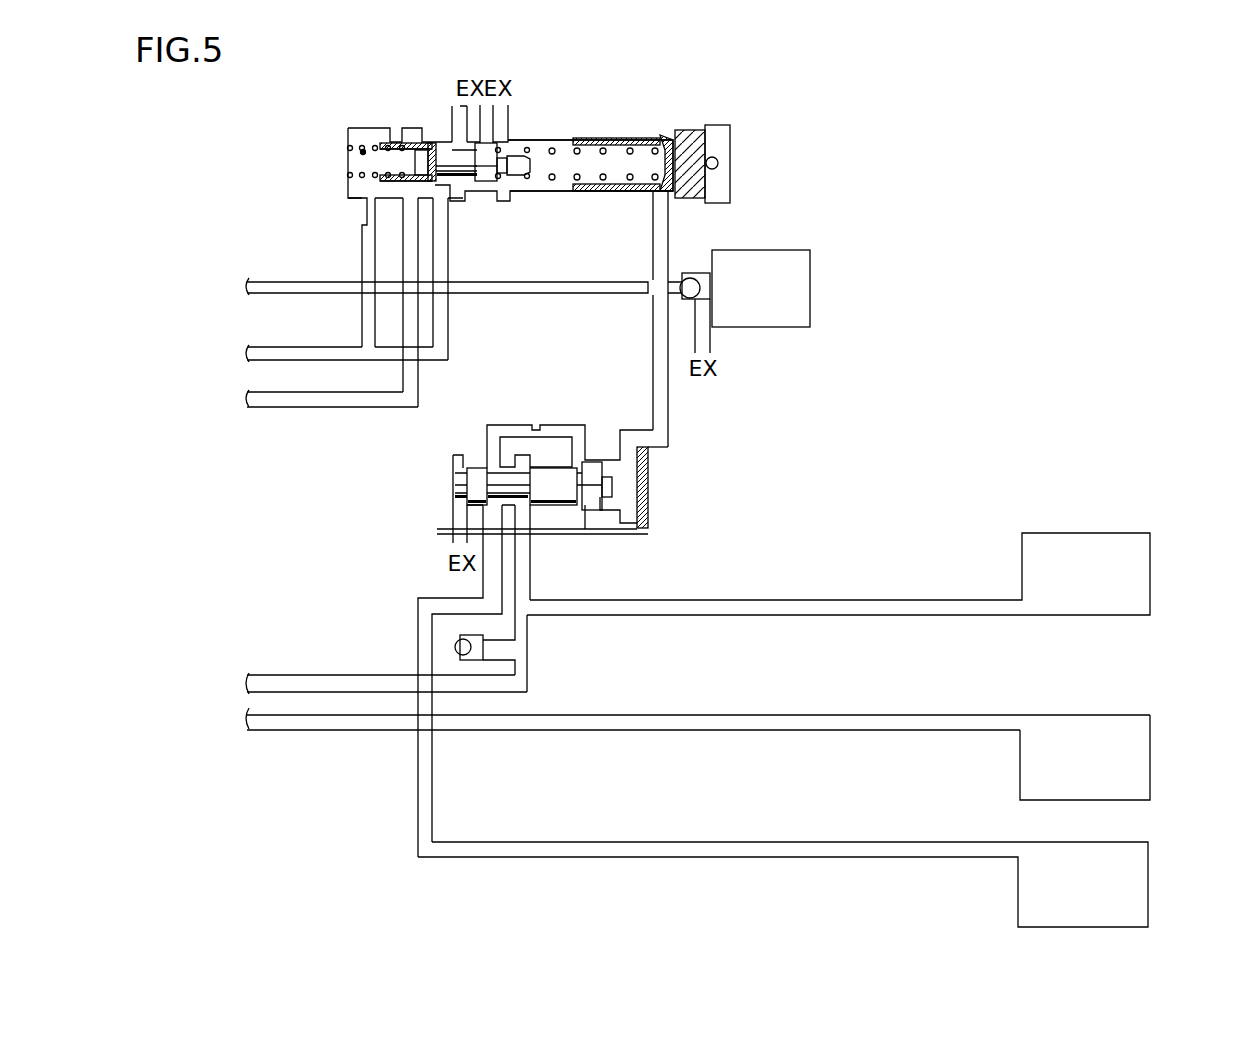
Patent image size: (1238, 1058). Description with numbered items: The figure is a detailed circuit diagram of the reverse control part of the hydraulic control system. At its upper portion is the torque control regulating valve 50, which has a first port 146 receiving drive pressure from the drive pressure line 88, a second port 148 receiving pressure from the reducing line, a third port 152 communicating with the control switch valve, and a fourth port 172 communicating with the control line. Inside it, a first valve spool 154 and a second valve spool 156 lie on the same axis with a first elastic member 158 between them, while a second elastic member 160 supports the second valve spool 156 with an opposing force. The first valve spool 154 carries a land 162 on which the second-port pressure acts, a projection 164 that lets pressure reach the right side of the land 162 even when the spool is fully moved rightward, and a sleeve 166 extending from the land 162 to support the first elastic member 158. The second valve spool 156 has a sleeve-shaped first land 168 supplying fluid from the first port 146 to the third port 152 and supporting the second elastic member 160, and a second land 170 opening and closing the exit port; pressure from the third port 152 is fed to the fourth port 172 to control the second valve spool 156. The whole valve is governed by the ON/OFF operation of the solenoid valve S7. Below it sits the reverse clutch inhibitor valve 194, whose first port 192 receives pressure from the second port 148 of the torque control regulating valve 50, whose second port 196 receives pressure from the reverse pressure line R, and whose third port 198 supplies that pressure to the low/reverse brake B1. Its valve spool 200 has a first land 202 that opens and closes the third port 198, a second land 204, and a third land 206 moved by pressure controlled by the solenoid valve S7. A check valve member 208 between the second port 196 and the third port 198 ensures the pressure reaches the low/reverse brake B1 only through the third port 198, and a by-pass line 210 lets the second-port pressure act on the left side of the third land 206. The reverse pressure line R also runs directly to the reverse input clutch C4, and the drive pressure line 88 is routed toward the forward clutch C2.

The torque control regulating valve 50 is at (336, 164).
The first port 146 is at (412, 192).
The second port 148 is at (667, 200).
The third port 152 is at (443, 190).
The first valve spool 154 is at (620, 197).
The second valve spool 156 is at (448, 150).
The first elastic member 158 is at (552, 150).
The second elastic member 160 is at (360, 152).
The land 162 is at (672, 132).
The projection 164 is at (712, 158).
The sleeve 166 is at (609, 138).
The first land 168 is at (390, 143).
The second land 170 is at (486, 203).
The fourth port 172 is at (365, 205).
The first port 192 is at (640, 448).
The reverse clutch inhibitor valve 194 is at (444, 480).
The second port 196 is at (520, 508).
The third port 198 is at (462, 508).
The valve spool 200 is at (620, 481).
The first land 202 is at (477, 468).
The second land 204 is at (552, 468).
The third land 206 is at (592, 462).
The check valve member 208 is at (455, 647).
The by-pass line 210 is at (512, 425).
The drive pressure line 88 is at (752, 730).
The solenoid valve S7 is at (761, 288).
The reverse pressure line R is at (528, 660).
The reverse input clutch C4 is at (1142, 572).
The forward clutch C2 is at (1142, 758).
The low/reverse clutch B1 is at (1142, 885).